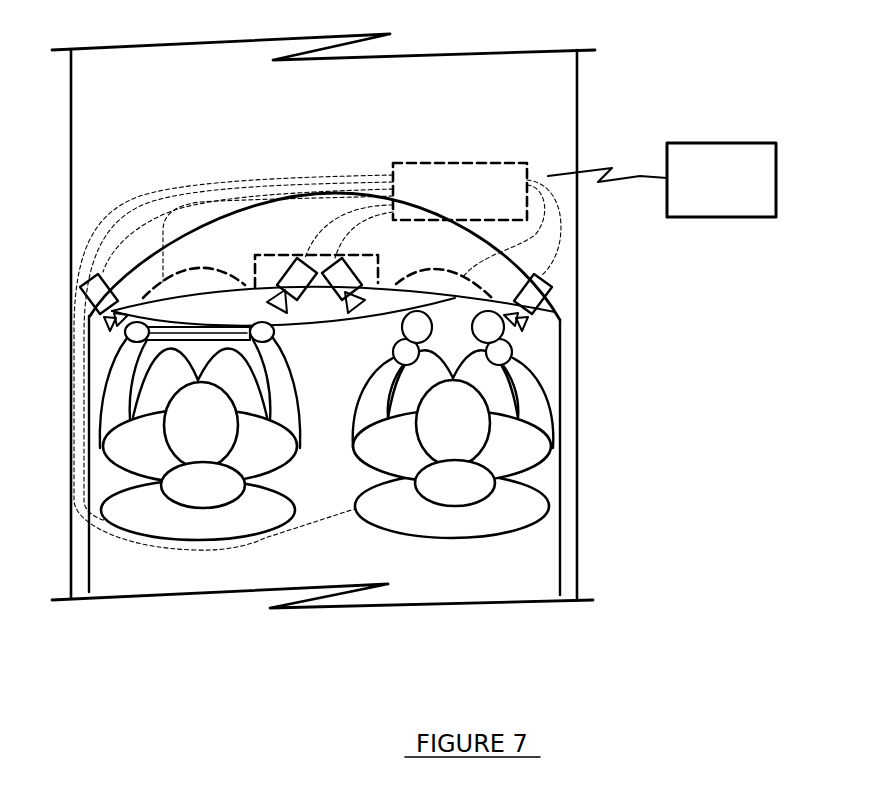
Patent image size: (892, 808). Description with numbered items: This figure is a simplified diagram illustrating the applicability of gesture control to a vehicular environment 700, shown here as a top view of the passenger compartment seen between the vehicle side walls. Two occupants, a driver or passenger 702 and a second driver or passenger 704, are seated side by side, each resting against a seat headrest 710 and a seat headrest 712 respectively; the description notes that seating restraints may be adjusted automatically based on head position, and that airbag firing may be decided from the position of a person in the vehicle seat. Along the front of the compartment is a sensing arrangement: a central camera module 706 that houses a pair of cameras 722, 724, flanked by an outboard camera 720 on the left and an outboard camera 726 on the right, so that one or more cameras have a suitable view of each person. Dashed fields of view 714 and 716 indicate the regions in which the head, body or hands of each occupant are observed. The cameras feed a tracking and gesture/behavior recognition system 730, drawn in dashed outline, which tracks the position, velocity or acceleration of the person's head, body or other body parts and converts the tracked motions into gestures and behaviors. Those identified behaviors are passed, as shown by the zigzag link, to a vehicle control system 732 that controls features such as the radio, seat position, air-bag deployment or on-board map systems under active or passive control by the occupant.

The room / conference environment 700 is at (323, 321).
The first user 702 is at (200, 431).
The second user 704 is at (453, 424).
The center speaker array 706 is at (288, 252).
The first user headrest / chair 710 is at (203, 485).
The second user headrest / chair 712 is at (455, 483).
The first virtual sound source 714 is at (232, 280).
The second virtual sound source 716 is at (415, 275).
The left loudspeaker 720 is at (97, 287).
The center-left loudspeaker 722 is at (297, 302).
The center-right loudspeaker 724 is at (343, 300).
The right loudspeaker 726 is at (552, 286).
The audio processor 730 is at (317, 356).
The remote system / network 732 is at (662, 180).